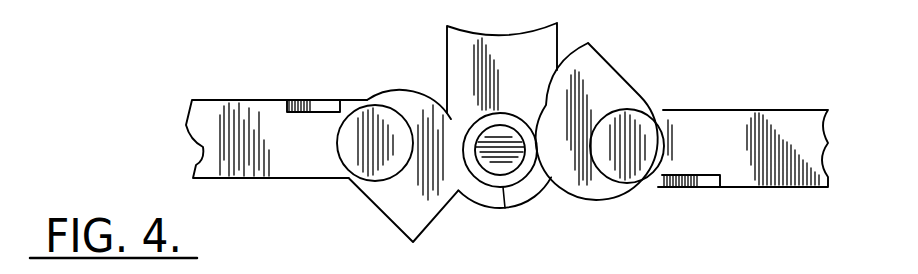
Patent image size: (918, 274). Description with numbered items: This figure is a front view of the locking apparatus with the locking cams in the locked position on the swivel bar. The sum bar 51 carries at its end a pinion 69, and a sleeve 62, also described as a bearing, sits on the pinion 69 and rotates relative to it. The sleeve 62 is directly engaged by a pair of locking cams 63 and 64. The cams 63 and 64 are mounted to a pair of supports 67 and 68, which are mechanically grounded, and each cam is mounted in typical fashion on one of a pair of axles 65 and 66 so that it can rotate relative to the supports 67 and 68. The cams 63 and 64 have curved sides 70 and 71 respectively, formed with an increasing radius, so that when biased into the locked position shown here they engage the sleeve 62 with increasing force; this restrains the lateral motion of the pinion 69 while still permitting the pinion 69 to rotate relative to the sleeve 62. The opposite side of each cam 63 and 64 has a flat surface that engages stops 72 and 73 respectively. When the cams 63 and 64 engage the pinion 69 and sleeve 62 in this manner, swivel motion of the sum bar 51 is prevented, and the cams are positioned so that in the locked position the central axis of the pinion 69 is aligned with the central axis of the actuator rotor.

The sum bar 51 is at (480, 26).
The sleeve 62 is at (511, 113).
The locking cam 63 is at (420, 93).
The locking cam 64 is at (608, 199).
The axle 65 is at (353, 166).
The axle 66 is at (643, 107).
The support 67 is at (255, 100).
The support 68 is at (700, 110).
The pinion 69 is at (505, 208).
The curved side 70 is at (422, 233).
The curved side 71 is at (572, 196).
The stop 72 is at (307, 100).
The stop 73 is at (697, 187).